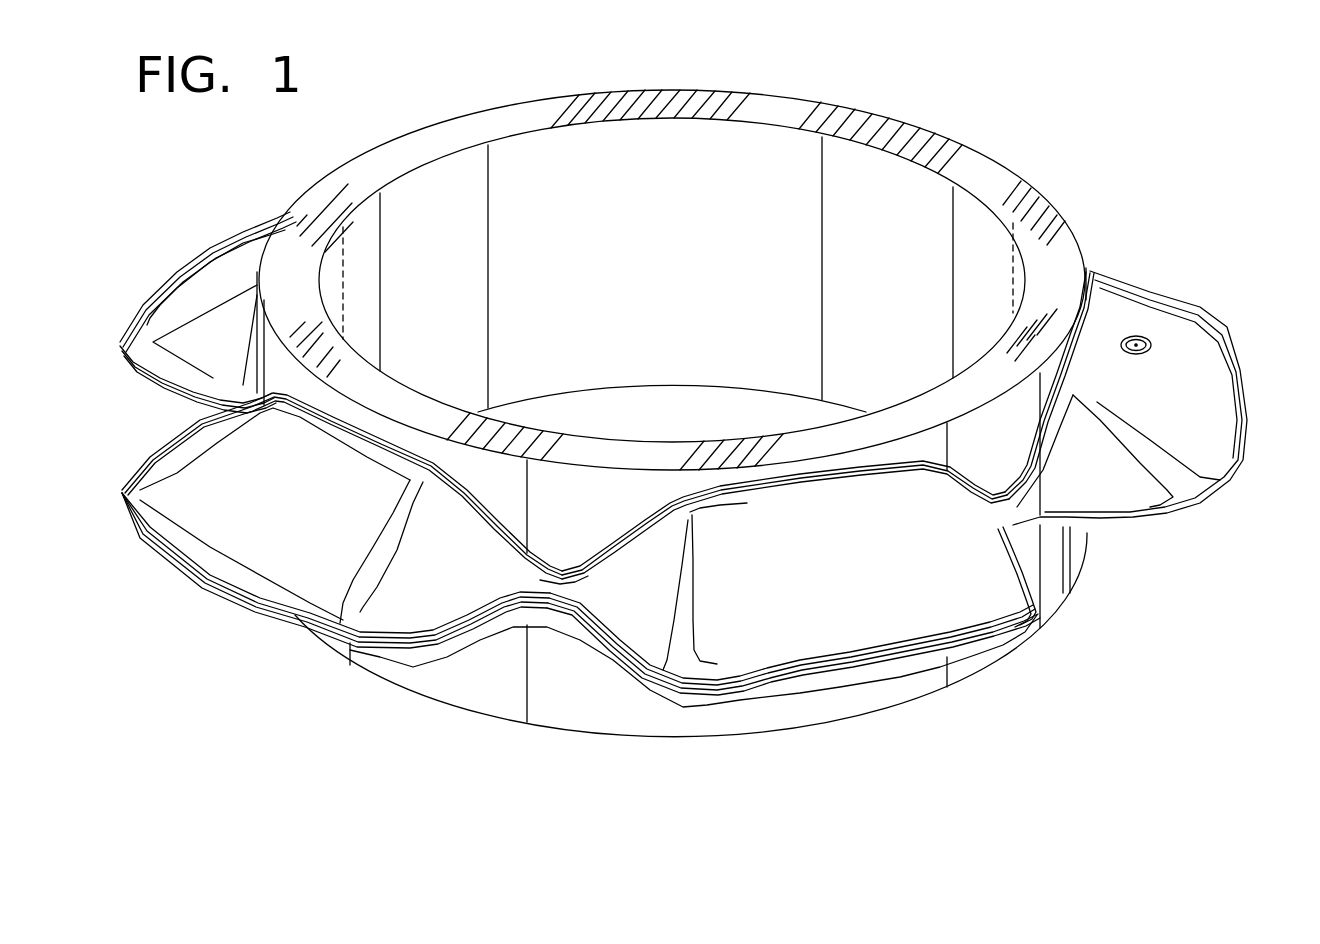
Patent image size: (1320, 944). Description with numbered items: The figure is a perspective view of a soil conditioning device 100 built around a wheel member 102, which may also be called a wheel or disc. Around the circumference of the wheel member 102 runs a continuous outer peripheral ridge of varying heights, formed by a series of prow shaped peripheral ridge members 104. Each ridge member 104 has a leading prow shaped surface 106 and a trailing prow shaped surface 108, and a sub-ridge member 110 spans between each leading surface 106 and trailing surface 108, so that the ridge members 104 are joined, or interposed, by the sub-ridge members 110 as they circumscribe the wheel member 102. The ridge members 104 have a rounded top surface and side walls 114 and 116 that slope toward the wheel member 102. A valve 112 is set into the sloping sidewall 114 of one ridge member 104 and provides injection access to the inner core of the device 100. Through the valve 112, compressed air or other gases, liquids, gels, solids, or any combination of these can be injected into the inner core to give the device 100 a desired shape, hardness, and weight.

The soil conditioning device 100 is at (1078, 125).
The wheel member 102 is at (672, 271).
The prow shaped peripheral ridge member 104 is at (683, 507).
The leading prow shaped surface 106 is at (342, 587).
The trailing prow shaped surface 108 is at (793, 626).
The sub-ridge member 110 is at (552, 689).
The valve 112 is at (1172, 249).
The side wall 114 is at (281, 522).
The side wall 116 is at (335, 601).